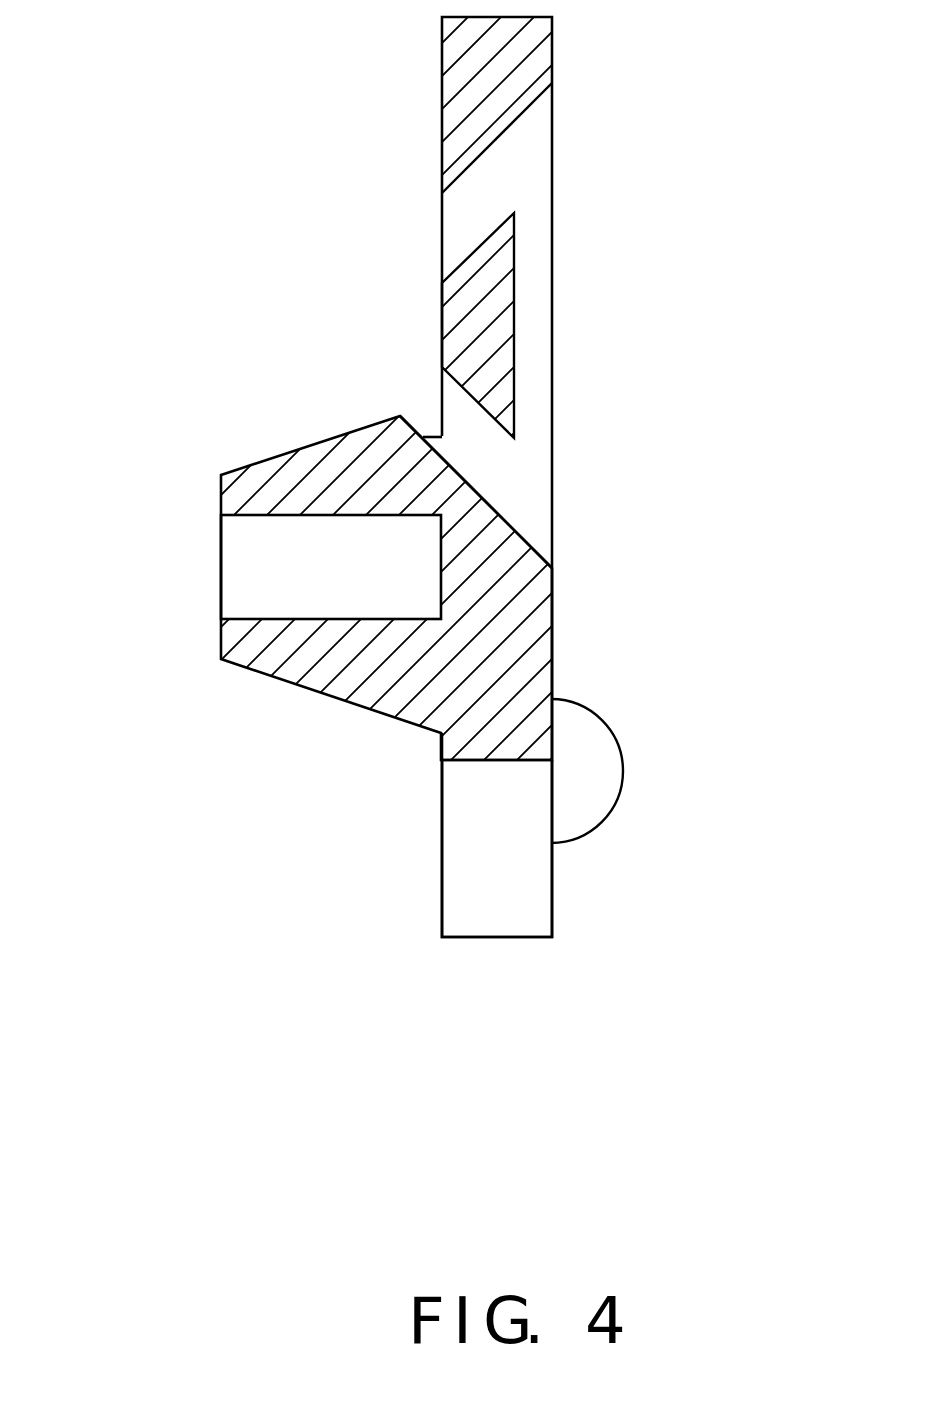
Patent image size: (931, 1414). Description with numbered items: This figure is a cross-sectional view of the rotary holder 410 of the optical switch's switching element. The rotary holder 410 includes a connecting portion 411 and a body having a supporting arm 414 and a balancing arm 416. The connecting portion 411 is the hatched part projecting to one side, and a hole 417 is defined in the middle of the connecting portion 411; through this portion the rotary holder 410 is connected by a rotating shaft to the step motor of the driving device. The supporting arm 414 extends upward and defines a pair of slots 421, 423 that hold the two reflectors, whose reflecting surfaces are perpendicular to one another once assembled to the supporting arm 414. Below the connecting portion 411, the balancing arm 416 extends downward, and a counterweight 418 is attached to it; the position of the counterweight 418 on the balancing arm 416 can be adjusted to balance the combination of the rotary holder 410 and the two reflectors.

The rotary holder 410 is at (206, 102).
The connecting portion 411 is at (368, 677).
The supporting arm 414 is at (528, 71).
The balancing arm 416 is at (516, 886).
The hole 417 is at (283, 537).
The counterweight 418 is at (600, 767).
The slot 421 is at (498, 182).
The slot 423 is at (487, 471).